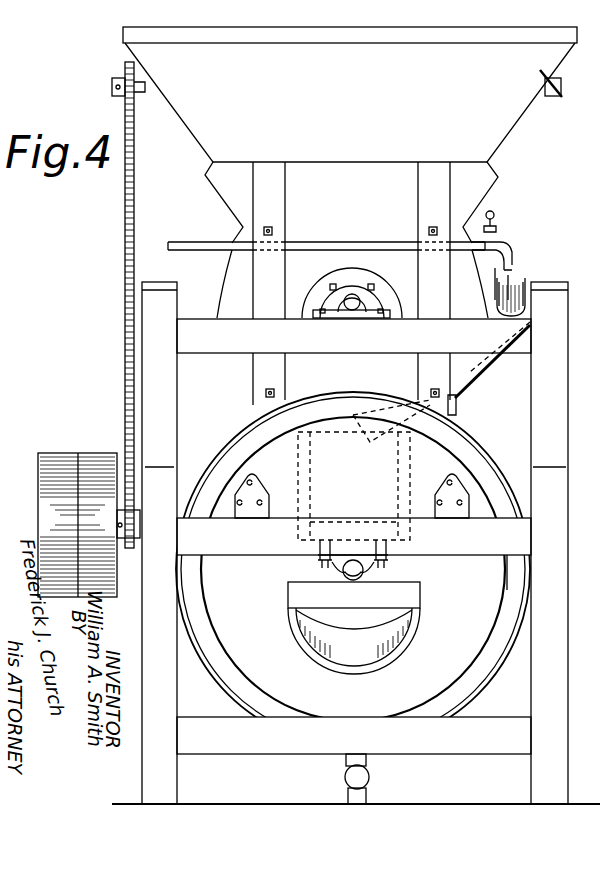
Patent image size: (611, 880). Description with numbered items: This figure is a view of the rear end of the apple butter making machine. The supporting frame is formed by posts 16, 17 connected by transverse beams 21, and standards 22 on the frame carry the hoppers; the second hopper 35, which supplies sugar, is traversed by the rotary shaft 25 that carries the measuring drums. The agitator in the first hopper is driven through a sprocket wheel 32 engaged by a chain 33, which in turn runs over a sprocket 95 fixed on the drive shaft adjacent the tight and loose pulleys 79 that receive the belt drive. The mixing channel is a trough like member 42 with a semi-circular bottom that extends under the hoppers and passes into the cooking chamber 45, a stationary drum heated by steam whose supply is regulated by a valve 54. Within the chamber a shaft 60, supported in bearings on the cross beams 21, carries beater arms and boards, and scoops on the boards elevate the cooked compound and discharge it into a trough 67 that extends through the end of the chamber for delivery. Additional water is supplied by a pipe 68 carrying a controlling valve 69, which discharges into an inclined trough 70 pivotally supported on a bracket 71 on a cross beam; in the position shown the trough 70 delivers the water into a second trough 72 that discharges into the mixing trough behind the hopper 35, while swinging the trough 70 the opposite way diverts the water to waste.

The post 16 is at (580, 400).
The post 17 is at (563, 625).
The transverse beam 21 is at (208, 352).
The standard 22 is at (275, 203).
The rotary shaft 25 is at (352, 302).
The sprocket wheel 32 is at (125, 64).
The chain 33 is at (135, 148).
The second hopper 35 is at (525, 118).
The trough like member 42 is at (410, 480).
The cooking container portion or chamber 45 is at (503, 655).
The valve 54 is at (380, 770).
The shaft 60 is at (348, 578).
The trough 67 is at (360, 650).
The pipe 68 is at (325, 242).
The controlling valve 69 is at (498, 228).
The inclined trough 70 is at (522, 272).
The bracket 71 is at (485, 295).
The second trough 72 is at (492, 393).
The tight and loose pulleys 79 is at (68, 453).
The sprocket 95 is at (130, 548).